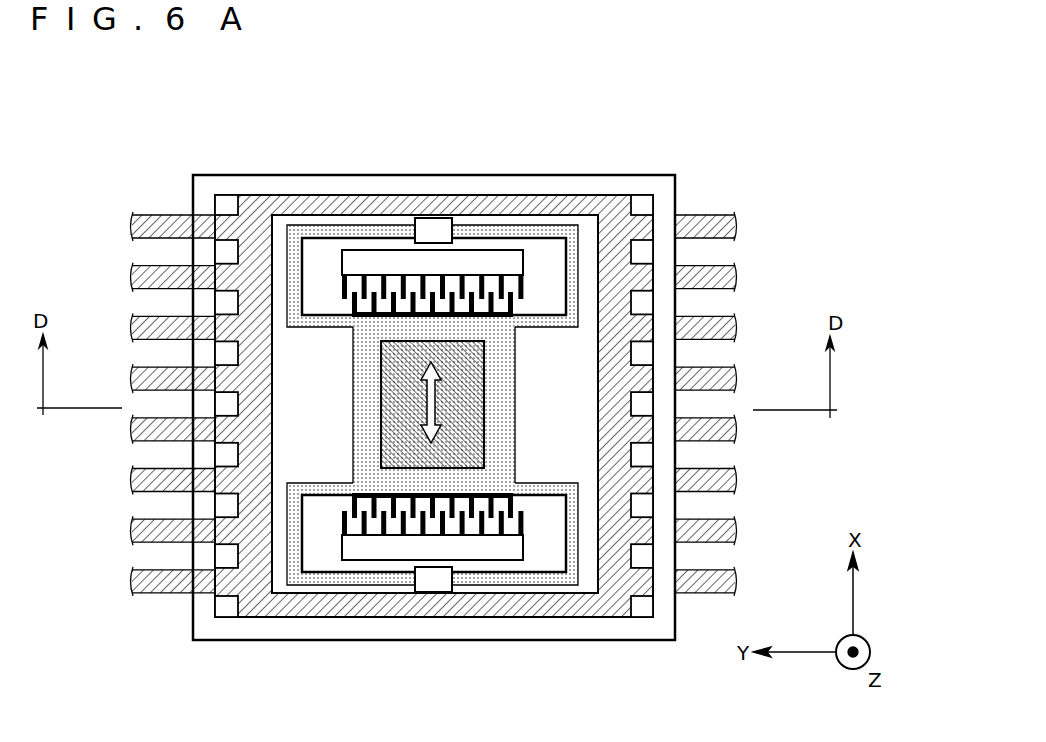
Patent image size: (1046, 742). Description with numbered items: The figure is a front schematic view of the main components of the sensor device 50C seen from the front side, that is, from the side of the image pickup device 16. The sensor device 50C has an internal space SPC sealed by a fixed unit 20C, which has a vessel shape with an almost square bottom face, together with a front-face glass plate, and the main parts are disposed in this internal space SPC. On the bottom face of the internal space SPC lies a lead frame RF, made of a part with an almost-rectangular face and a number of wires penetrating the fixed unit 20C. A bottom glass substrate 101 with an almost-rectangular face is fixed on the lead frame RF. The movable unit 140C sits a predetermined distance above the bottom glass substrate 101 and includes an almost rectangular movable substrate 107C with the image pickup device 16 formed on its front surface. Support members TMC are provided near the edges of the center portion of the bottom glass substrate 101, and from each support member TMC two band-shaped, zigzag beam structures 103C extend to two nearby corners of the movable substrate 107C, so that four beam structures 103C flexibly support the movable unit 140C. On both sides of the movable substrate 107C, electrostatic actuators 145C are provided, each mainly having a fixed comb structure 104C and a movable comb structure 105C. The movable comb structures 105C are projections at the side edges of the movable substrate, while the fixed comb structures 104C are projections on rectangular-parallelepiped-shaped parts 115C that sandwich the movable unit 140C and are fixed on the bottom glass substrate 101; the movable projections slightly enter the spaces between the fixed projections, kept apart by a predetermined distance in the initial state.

The sensor device 50C is at (148, 110).
The bottom glass substrate 101 is at (275, 583).
The fixed unit 20C is at (433, 195).
The lead frame RF is at (692, 214).
The internal space SPC is at (229, 204).
The beam structures 103C is at (317, 328).
The movable unit 140C is at (369, 413).
The electrostatic actuators 145C is at (532, 257).
The movable substrate 107C is at (515, 398).
The image pickup device 16 is at (485, 419).
The support members TMC is at (444, 224).
The rectangular-parallelepiped-shaped parts 115C is at (500, 258).
The fixed comb structure 104C is at (342, 284).
The movable comb structure 105C is at (352, 303).